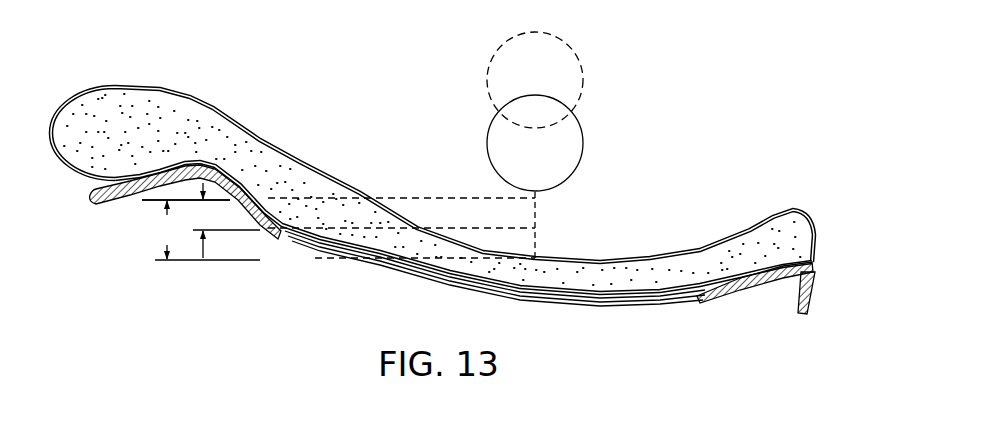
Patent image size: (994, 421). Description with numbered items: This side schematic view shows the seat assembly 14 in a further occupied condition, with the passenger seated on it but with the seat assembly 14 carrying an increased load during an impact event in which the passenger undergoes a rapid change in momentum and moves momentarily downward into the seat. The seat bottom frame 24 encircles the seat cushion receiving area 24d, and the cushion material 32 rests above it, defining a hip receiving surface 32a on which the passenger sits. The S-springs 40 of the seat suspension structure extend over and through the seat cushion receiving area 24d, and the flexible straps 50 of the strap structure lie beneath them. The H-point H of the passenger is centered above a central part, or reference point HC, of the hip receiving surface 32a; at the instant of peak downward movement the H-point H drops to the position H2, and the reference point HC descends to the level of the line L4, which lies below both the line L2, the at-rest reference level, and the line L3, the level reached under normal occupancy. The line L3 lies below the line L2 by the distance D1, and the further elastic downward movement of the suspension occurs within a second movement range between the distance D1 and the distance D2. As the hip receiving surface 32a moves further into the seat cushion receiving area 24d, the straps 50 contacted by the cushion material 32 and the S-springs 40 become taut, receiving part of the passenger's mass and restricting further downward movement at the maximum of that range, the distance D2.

The seat assembly 14 is at (280, 55).
The seat bottom frame 24 is at (108, 207).
The seat cushion receiving area 24d is at (279, 232).
The cushion material 32 is at (761, 248).
The hip receiving surface 32a is at (633, 259).
The S-springs 40 is at (613, 306).
The flexible straps 50 is at (527, 300).
The H-point H is at (581, 63).
The H-point position H2 is at (578, 168).
The reference point / central part of hip receiving surface HC is at (539, 256).
The distance D1 is at (186, 204).
The distance D2 is at (164, 230).
The line L2 is at (143, 201).
The line L3 is at (222, 230).
The line L4 is at (187, 263).